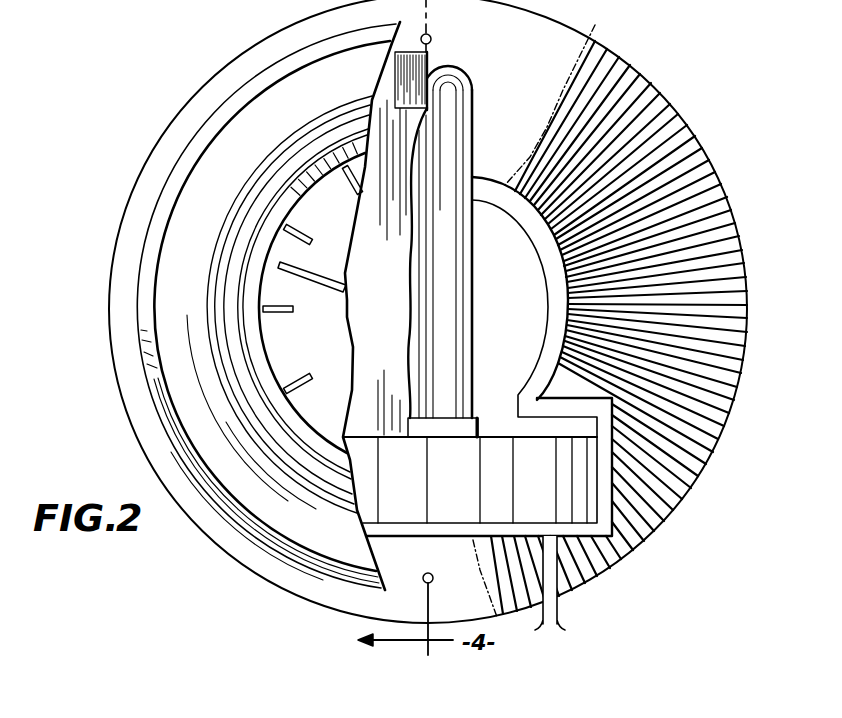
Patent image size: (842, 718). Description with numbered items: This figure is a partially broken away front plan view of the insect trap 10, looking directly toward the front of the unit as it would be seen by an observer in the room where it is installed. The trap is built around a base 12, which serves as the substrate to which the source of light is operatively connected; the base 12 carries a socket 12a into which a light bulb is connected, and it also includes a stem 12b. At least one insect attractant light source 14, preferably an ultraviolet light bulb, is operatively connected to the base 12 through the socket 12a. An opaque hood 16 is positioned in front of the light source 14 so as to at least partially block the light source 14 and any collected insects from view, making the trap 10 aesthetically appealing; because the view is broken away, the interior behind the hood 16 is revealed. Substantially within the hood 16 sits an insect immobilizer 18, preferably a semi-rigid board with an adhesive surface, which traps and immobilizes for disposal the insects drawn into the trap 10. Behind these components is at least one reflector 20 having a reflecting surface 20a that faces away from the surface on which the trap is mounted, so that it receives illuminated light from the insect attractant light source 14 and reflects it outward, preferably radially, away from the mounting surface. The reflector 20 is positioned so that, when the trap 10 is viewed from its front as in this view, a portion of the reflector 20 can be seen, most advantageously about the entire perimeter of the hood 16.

The insect trap 10 is at (134, 158).
The base 12 is at (494, 412).
The socket 12a is at (440, 428).
The stem 12b is at (558, 610).
The insect attractant light source 14 is at (457, 90).
The opaque hood 16 is at (290, 481).
The insect immobilizer 18 is at (388, 268).
The reflector 20 is at (719, 183).
The reflecting surface 20a is at (714, 344).